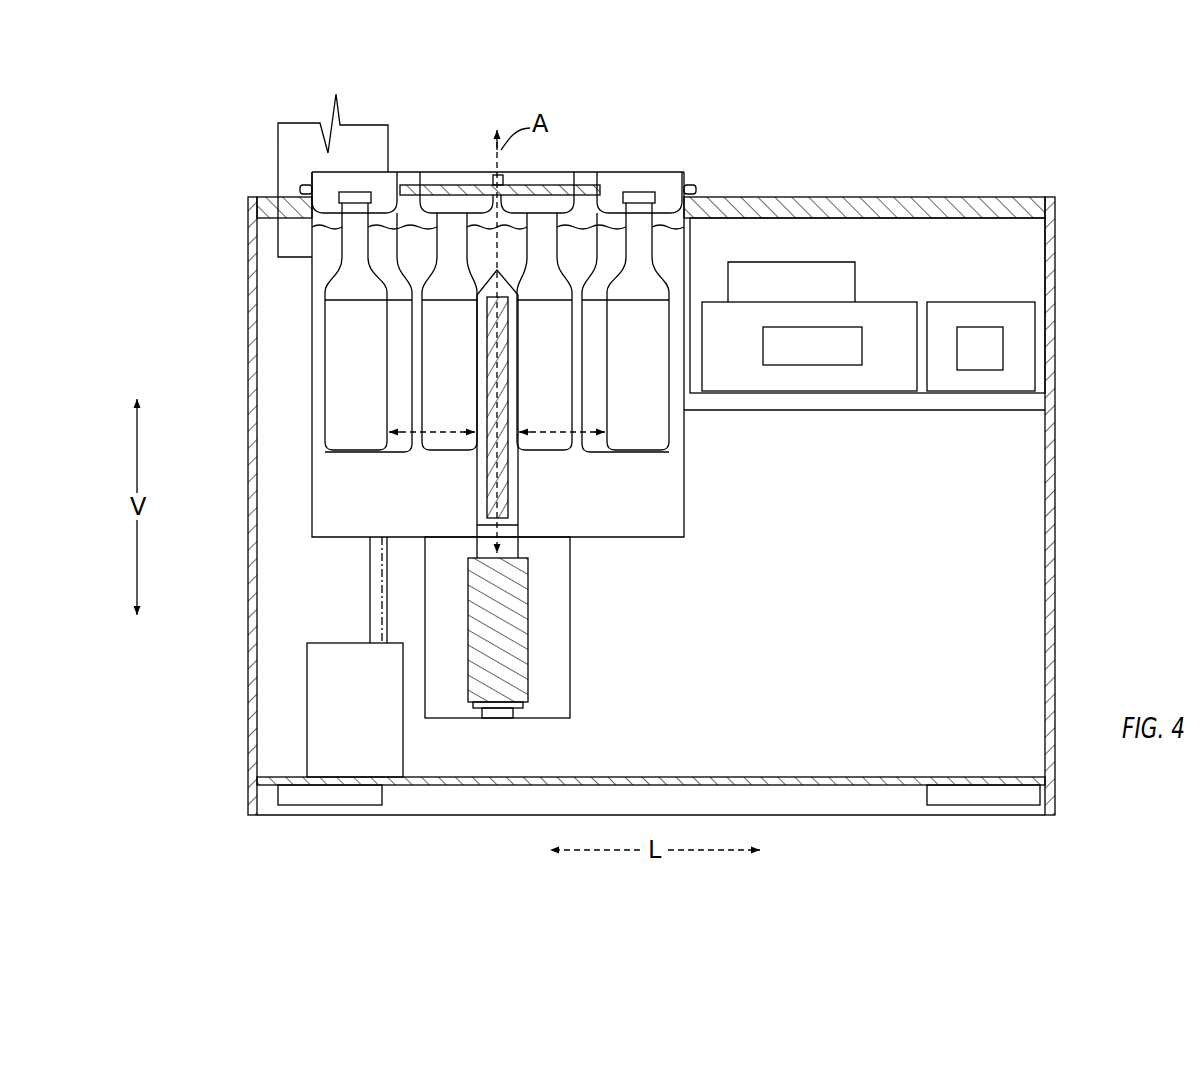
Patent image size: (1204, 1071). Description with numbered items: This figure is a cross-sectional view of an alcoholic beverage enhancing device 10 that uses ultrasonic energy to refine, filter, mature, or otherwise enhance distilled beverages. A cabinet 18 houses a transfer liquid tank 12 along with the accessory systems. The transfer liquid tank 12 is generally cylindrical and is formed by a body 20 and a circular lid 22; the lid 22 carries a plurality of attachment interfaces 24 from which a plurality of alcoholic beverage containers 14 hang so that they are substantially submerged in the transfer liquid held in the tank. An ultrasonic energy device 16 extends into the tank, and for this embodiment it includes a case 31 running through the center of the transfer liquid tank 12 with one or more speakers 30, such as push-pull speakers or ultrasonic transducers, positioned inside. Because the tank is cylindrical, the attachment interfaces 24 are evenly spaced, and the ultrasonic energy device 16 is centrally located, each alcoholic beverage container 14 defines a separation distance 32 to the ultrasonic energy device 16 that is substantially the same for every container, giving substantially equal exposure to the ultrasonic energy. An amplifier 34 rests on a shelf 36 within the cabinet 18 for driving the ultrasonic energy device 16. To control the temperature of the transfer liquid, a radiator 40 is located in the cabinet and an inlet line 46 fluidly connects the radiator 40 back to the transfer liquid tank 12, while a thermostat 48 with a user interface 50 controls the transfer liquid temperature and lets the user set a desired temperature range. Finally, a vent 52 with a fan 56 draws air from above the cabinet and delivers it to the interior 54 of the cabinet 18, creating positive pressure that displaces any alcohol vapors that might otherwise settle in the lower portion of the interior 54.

The alcoholic beverage enhancing device 10 is at (779, 98).
The transfer liquid tank 12 is at (281, 311).
The alcoholic beverage container 14 is at (333, 378).
The ultrasonic energy device 16 is at (606, 594).
The cabinet 18 is at (835, 197).
The body 20 is at (310, 500).
The lid 22 is at (688, 188).
The attachment interface 24 is at (374, 182).
The speaker 30 is at (510, 485).
The case 31 is at (475, 498).
The separation distance 32 is at (441, 433).
The amplifier 34 is at (876, 285).
The shelf 36 is at (923, 406).
The radiator 40 is at (312, 732).
The inlet line 46 is at (375, 592).
The thermostat 48 is at (988, 285).
The user interface 50 is at (1005, 348).
The vent 52 is at (292, 162).
The interior 54 is at (950, 584).
The fan 56 is at (292, 245).